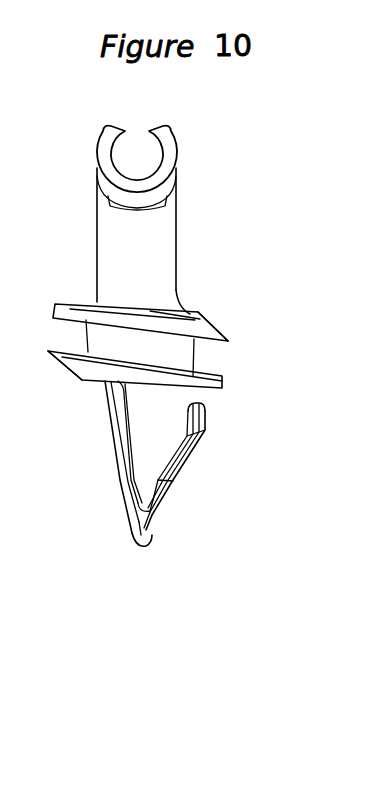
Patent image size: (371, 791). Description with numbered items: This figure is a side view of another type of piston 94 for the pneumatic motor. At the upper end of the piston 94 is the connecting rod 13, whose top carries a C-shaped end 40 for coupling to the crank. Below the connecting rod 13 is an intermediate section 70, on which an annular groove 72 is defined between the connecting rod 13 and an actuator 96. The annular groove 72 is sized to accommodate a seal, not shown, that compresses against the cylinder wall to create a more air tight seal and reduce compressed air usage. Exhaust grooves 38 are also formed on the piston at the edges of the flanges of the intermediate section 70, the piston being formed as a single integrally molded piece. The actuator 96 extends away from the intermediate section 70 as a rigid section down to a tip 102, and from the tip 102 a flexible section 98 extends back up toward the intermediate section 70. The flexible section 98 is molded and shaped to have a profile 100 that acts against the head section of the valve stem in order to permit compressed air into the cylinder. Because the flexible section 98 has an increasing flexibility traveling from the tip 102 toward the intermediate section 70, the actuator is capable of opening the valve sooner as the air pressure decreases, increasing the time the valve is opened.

The connecting rod 13 is at (105, 238).
The C-shaped clip head 40 is at (160, 154).
The piston 94 is at (204, 222).
The intermediate section 70 is at (222, 323).
The annular groove 72 is at (217, 350).
The exhaust grooves 38 is at (207, 322).
The actuator 96 is at (118, 477).
The flexible section 98 is at (190, 466).
The profile 100 is at (166, 515).
The tip 102 is at (138, 549).